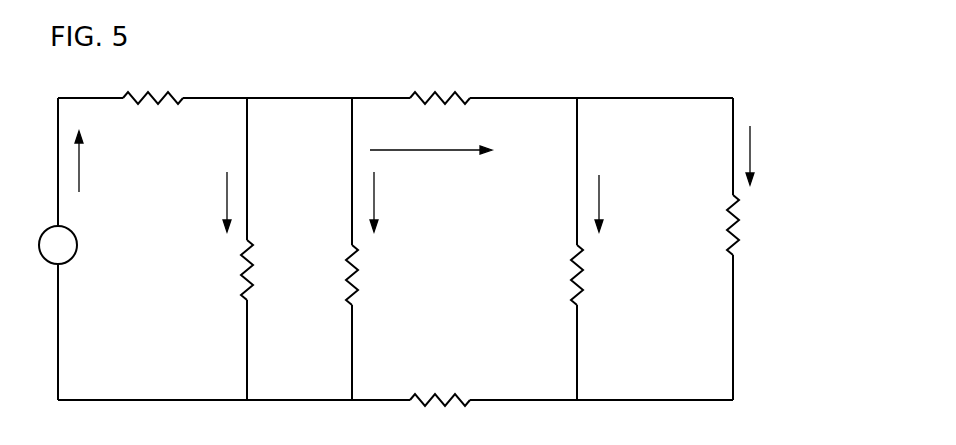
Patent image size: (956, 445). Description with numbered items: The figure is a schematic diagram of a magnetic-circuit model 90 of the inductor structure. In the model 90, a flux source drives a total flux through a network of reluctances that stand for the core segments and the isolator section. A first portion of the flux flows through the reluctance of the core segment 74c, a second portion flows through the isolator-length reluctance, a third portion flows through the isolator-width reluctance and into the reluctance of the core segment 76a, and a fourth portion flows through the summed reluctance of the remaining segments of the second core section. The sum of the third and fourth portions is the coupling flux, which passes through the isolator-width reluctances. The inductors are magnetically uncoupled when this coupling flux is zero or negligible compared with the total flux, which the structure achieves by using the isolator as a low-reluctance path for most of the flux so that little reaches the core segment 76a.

The magnetic-circuit model 90 is at (527, 65).
The core segment 74c is at (204, 270).
The core segment 76a is at (613, 275).